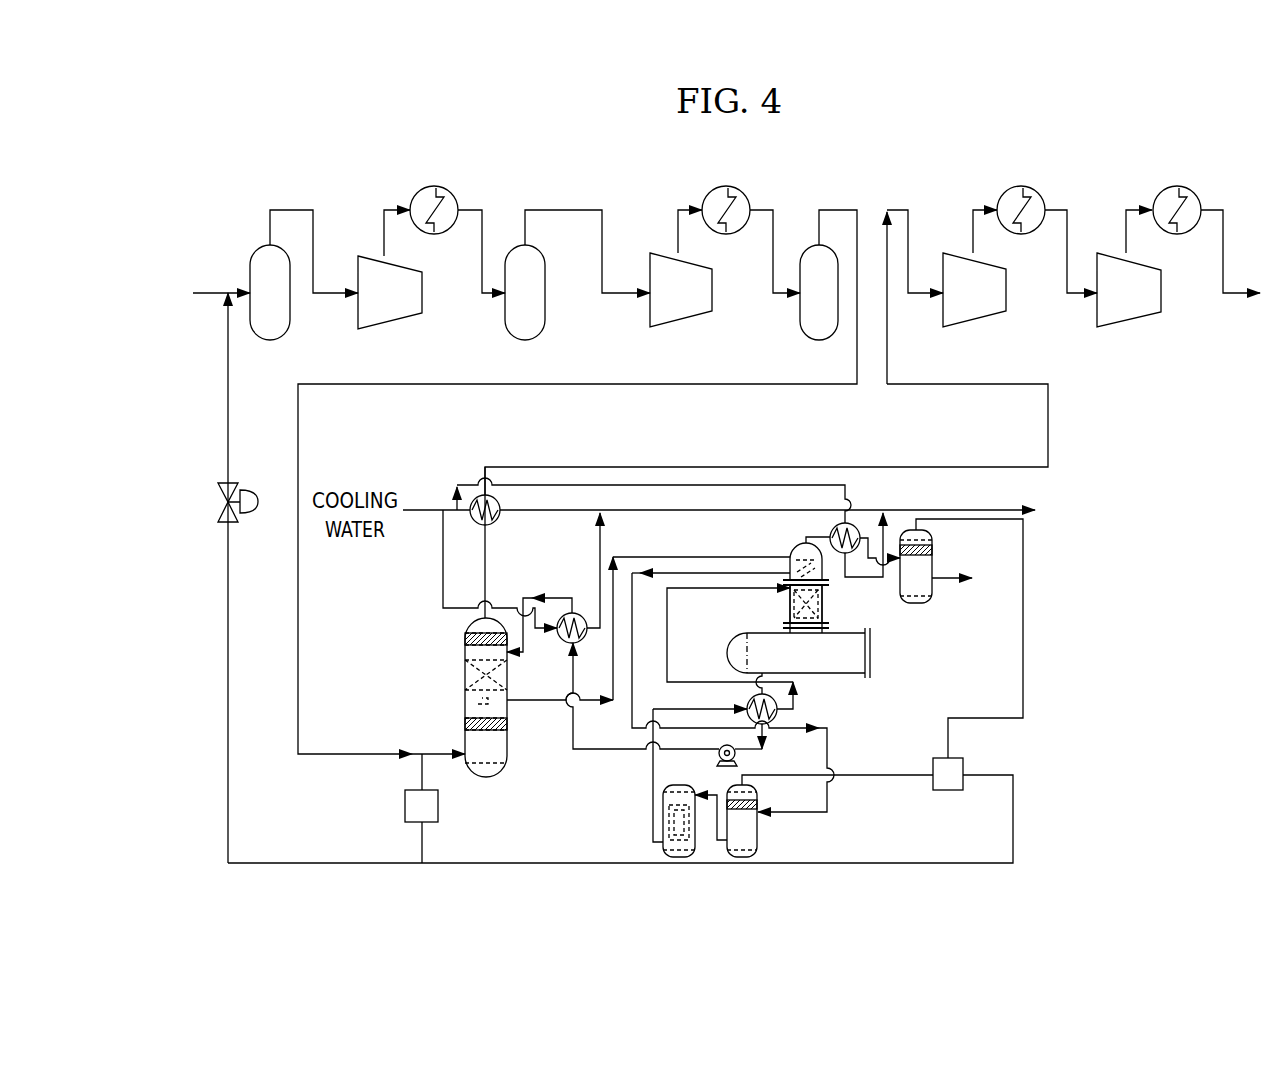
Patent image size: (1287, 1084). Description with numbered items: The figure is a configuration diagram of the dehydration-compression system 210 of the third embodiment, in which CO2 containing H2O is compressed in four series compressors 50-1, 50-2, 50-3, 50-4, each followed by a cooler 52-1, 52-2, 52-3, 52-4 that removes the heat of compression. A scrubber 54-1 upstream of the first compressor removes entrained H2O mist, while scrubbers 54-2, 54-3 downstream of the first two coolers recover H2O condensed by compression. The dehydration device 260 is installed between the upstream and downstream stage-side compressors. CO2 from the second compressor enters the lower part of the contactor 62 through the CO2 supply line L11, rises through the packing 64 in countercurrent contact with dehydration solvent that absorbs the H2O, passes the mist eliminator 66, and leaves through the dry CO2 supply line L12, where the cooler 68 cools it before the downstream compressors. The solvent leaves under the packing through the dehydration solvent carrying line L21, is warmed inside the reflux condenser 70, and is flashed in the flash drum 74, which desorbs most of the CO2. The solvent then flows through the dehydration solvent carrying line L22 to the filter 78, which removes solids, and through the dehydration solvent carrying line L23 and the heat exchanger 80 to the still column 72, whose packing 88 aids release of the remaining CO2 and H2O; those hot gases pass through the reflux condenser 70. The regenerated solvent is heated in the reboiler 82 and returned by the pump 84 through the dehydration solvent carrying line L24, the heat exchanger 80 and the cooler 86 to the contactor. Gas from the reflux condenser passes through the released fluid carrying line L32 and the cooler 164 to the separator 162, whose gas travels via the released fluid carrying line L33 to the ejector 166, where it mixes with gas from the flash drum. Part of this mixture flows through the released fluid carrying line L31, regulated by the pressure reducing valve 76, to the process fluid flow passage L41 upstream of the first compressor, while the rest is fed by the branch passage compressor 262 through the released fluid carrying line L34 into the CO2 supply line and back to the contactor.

The dehydration-compression system 210 is at (1054, 161).
The dehydration device 260 is at (1087, 561).
The compressor 50-1 is at (392, 323).
The compressor 50-2 is at (684, 322).
The compressor 50-3 is at (978, 322).
The compressor 50-4 is at (1128, 325).
The cooler 52-1 is at (416, 192).
The cooler 52-2 is at (708, 193).
The cooler 52-3 is at (1003, 193).
The cooler 52-4 is at (1165, 190).
The scrubber 54-1 is at (262, 243).
The scrubber 54-2 is at (521, 243).
The scrubber 54-3 is at (816, 243).
The pressure reducing valve 76 is at (218, 497).
The contactor 62 is at (410, 697).
The packing 64 is at (465, 672).
The mist eliminator 66 is at (465, 636).
The cooler 68 is at (496, 522).
The reflux condenser 70 is at (788, 556).
The still column 72 is at (790, 600).
The flash drum 74 is at (758, 826).
The filter 78 is at (663, 848).
The heat exchanger 80 is at (780, 718).
The reboiler 82 is at (847, 676).
The pump 84 is at (717, 758).
The cooler 86 is at (572, 612).
The packing 88 is at (822, 604).
The separator 162 is at (916, 605).
The cooler 164 is at (855, 528).
The ejector 166 is at (948, 793).
The branch passage compressor 262 is at (405, 805).
The CO2 supply line L11 is at (298, 420).
The dry CO2 supply line L12 is at (978, 465).
The dehydration solvent carrying line L21 is at (666, 556).
The dehydration solvent carrying line L22 is at (713, 845).
The dehydration solvent carrying line L23 is at (668, 633).
The dehydration solvent carrying line L24 is at (613, 748).
The released fluid carrying line L31 is at (1013, 808).
The released fluid carrying line L32 is at (813, 535).
The released fluid carrying line L33 is at (1023, 635).
The released fluid carrying line L34 is at (422, 838).
The process fluid flow passage L41 is at (203, 290).